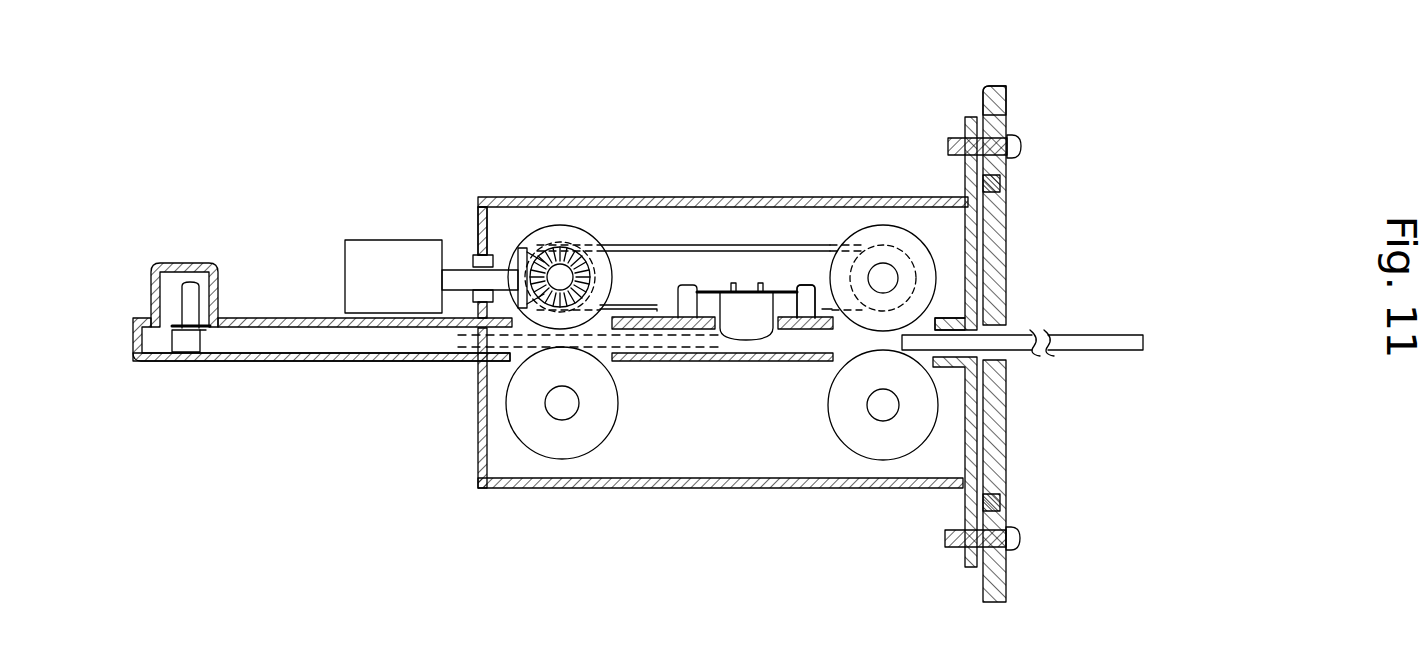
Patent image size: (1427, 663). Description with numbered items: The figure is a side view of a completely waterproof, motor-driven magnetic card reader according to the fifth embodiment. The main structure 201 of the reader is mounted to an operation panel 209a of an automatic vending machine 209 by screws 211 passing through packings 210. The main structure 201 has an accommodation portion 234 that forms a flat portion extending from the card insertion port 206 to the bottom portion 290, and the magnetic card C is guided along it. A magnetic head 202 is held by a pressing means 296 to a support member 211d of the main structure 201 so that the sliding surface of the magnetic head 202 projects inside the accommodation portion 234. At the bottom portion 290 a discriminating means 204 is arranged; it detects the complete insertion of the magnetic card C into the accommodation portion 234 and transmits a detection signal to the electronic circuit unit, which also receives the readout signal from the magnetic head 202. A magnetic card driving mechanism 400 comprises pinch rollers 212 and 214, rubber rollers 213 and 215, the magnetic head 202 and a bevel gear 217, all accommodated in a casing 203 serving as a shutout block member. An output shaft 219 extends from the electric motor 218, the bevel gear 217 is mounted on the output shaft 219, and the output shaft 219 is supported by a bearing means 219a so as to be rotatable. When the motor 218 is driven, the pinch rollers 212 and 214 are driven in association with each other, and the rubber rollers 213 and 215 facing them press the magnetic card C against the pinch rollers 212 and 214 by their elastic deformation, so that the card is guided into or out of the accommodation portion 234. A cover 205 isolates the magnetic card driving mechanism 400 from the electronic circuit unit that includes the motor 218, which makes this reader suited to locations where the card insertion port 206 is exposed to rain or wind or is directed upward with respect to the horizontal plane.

The main structure 201 is at (335, 316).
The magnetic head 202 is at (744, 312).
The casing 203 is at (489, 250).
The discriminating means 204 is at (176, 290).
The cover 205 is at (625, 196).
The card insertion port 206 is at (960, 318).
The automatic vending machine 209 is at (1082, 113).
The operation panel 209a is at (1003, 107).
The packings 210 is at (1003, 200).
The screws 211 is at (1018, 146).
The support member 211d is at (686, 300).
The pinch roller 212 is at (918, 282).
The rubber roller 213 is at (865, 437).
The pinch roller 214 is at (541, 306).
The rubber roller 215 is at (540, 437).
The bevel gear 217 is at (558, 262).
The electric motor 218 is at (383, 257).
The output shaft 219 is at (463, 278).
The bearing means 219a is at (522, 265).
The accommodation portion 234 is at (363, 340).
The bottom portion 290 is at (188, 362).
The pressing means 296 is at (804, 300).
The magnetic card driving mechanism 400 is at (712, 228).
The magnetic card C is at (1068, 342).